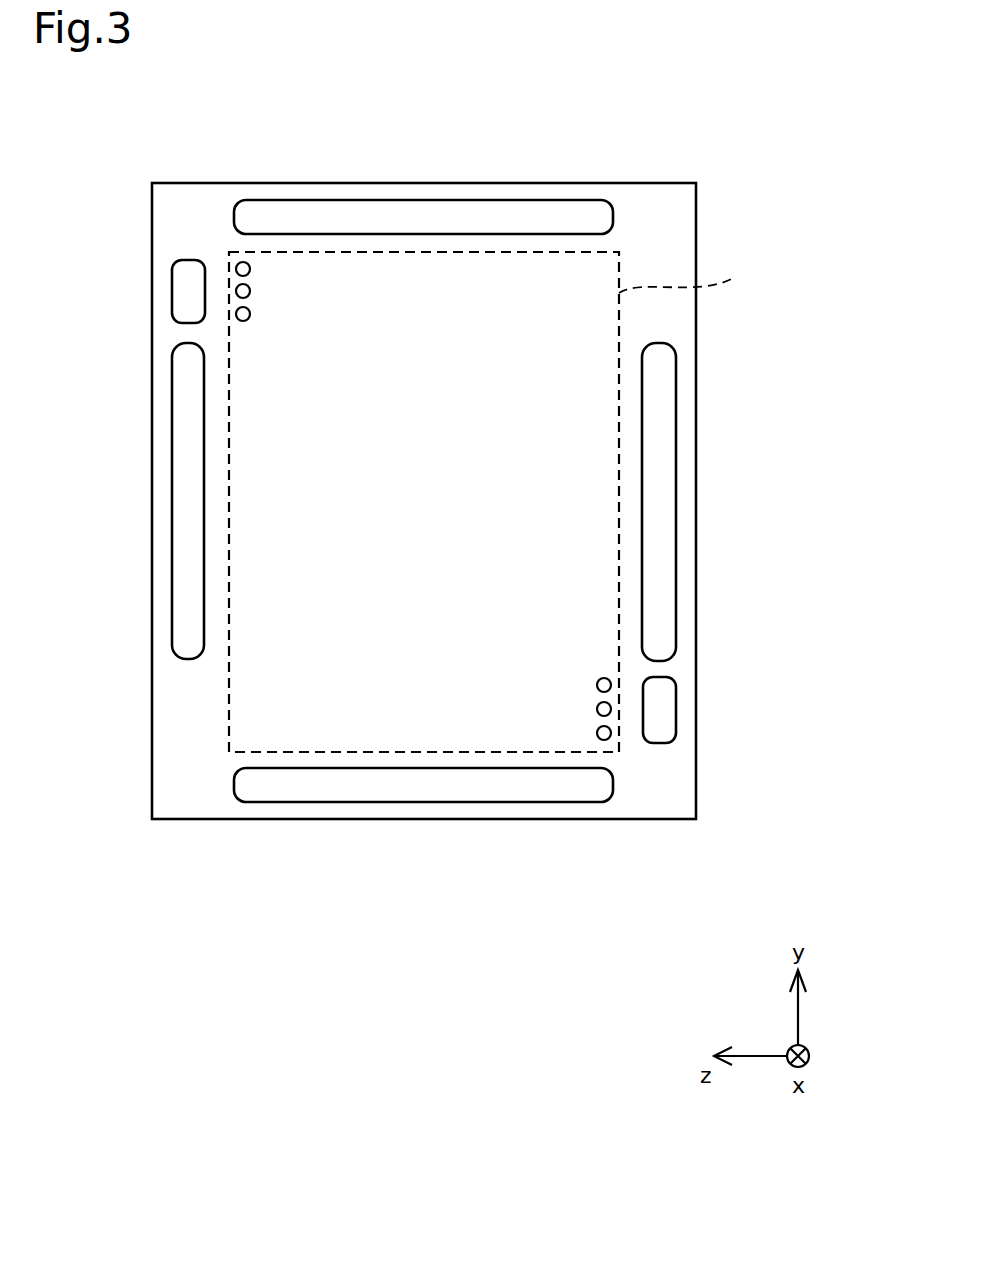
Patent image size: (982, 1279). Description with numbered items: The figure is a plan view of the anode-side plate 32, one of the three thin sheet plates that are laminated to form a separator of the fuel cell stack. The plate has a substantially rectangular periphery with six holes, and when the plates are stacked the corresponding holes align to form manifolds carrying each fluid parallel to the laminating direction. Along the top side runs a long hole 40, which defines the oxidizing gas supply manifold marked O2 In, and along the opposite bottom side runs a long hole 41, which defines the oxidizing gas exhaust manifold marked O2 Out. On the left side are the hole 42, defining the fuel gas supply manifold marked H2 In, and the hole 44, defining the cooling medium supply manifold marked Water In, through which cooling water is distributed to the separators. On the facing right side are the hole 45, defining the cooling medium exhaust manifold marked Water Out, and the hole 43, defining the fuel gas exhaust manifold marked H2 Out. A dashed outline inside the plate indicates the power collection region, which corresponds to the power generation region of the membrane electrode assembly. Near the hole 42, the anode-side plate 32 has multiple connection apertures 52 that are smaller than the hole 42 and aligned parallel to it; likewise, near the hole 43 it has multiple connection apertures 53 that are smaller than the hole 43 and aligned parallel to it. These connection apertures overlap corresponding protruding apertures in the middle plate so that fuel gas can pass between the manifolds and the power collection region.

The anode-side plate 32 is at (658, 142).
The long hole 40 is at (270, 213).
The long hole 41 is at (287, 791).
The hole 42 is at (172, 270).
The hole 43 is at (663, 678).
The hole 44 is at (185, 398).
The hole 45 is at (663, 383).
The connection apertures 52 is at (250, 271).
The connection apertures 53 is at (597, 687).